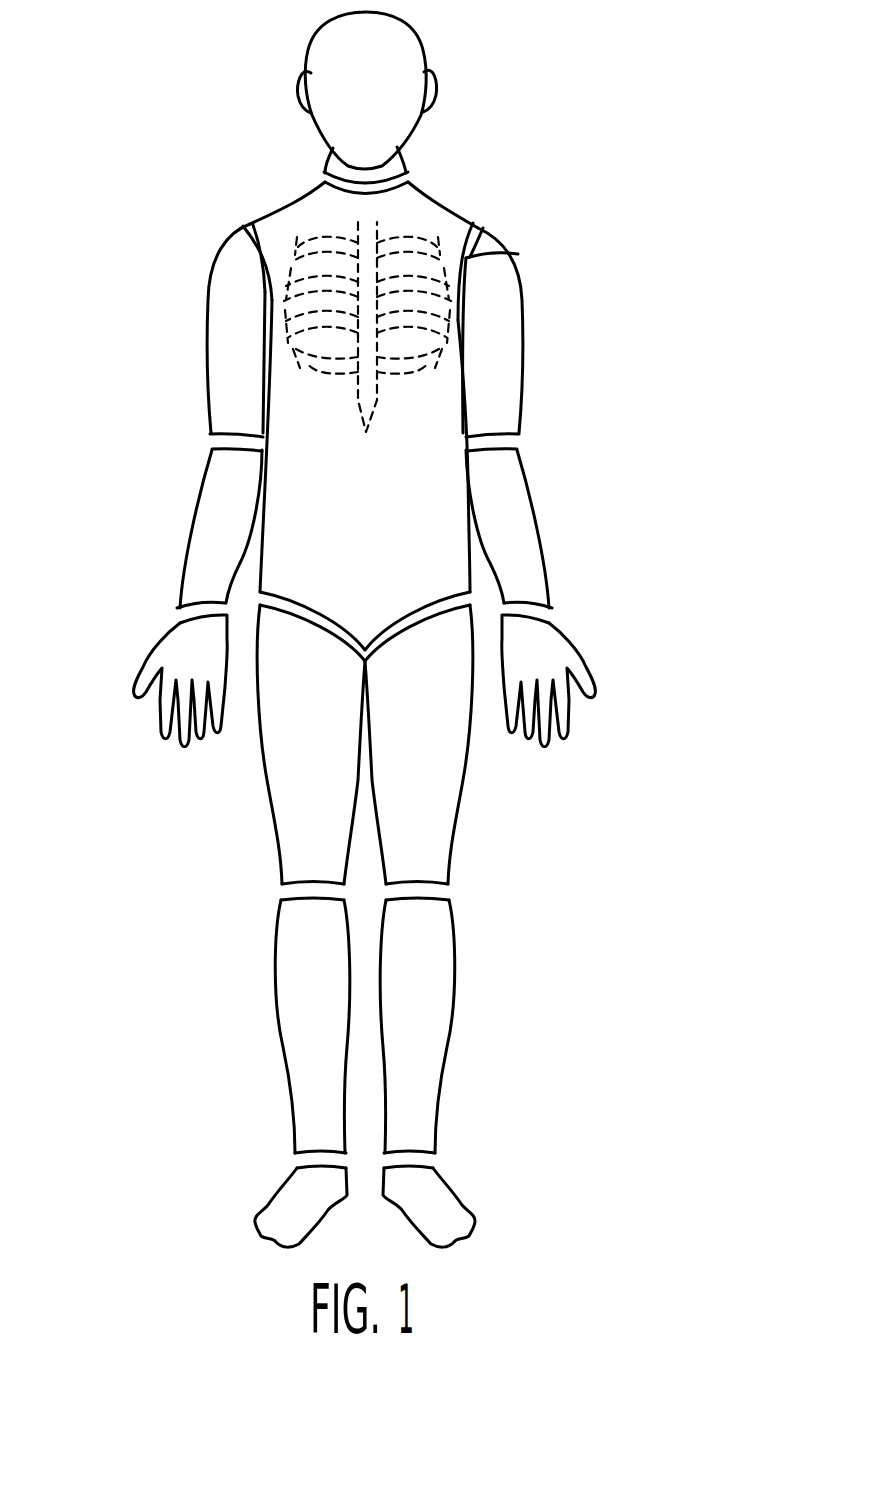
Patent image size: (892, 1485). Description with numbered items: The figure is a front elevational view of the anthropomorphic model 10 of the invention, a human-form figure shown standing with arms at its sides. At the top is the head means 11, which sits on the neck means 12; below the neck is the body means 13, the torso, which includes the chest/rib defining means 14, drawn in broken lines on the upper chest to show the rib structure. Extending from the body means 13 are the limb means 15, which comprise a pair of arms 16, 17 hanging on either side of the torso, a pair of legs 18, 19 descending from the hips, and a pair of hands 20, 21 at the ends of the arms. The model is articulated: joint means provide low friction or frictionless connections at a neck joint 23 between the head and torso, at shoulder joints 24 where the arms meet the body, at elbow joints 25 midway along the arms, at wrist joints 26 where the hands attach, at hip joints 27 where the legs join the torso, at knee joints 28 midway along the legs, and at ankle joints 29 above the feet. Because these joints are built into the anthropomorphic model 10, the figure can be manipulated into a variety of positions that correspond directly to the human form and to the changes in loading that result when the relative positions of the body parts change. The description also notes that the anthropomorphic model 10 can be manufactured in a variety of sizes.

The anthropomorphic model 10 is at (408, 22).
The head means 11 is at (418, 130).
The neck means 12 is at (404, 166).
The body means 13 is at (462, 212).
The chest/rib defining means 14 is at (460, 310).
The limb means 15 is at (208, 292).
The arm 16 is at (522, 398).
The arm 17 is at (208, 368).
The leg 18 is at (458, 820).
The leg 19 is at (262, 745).
The hand 20 is at (178, 658).
The hand 21 is at (557, 658).
The neck joint 23 is at (324, 171).
The shoulder joint 24 is at (253, 227).
The elbow joint 25 is at (212, 437).
The wrist joint 26 is at (177, 606).
The hip joint 27 is at (457, 603).
The knee joint 28 is at (287, 890).
The ankle joint 29 is at (300, 1163).